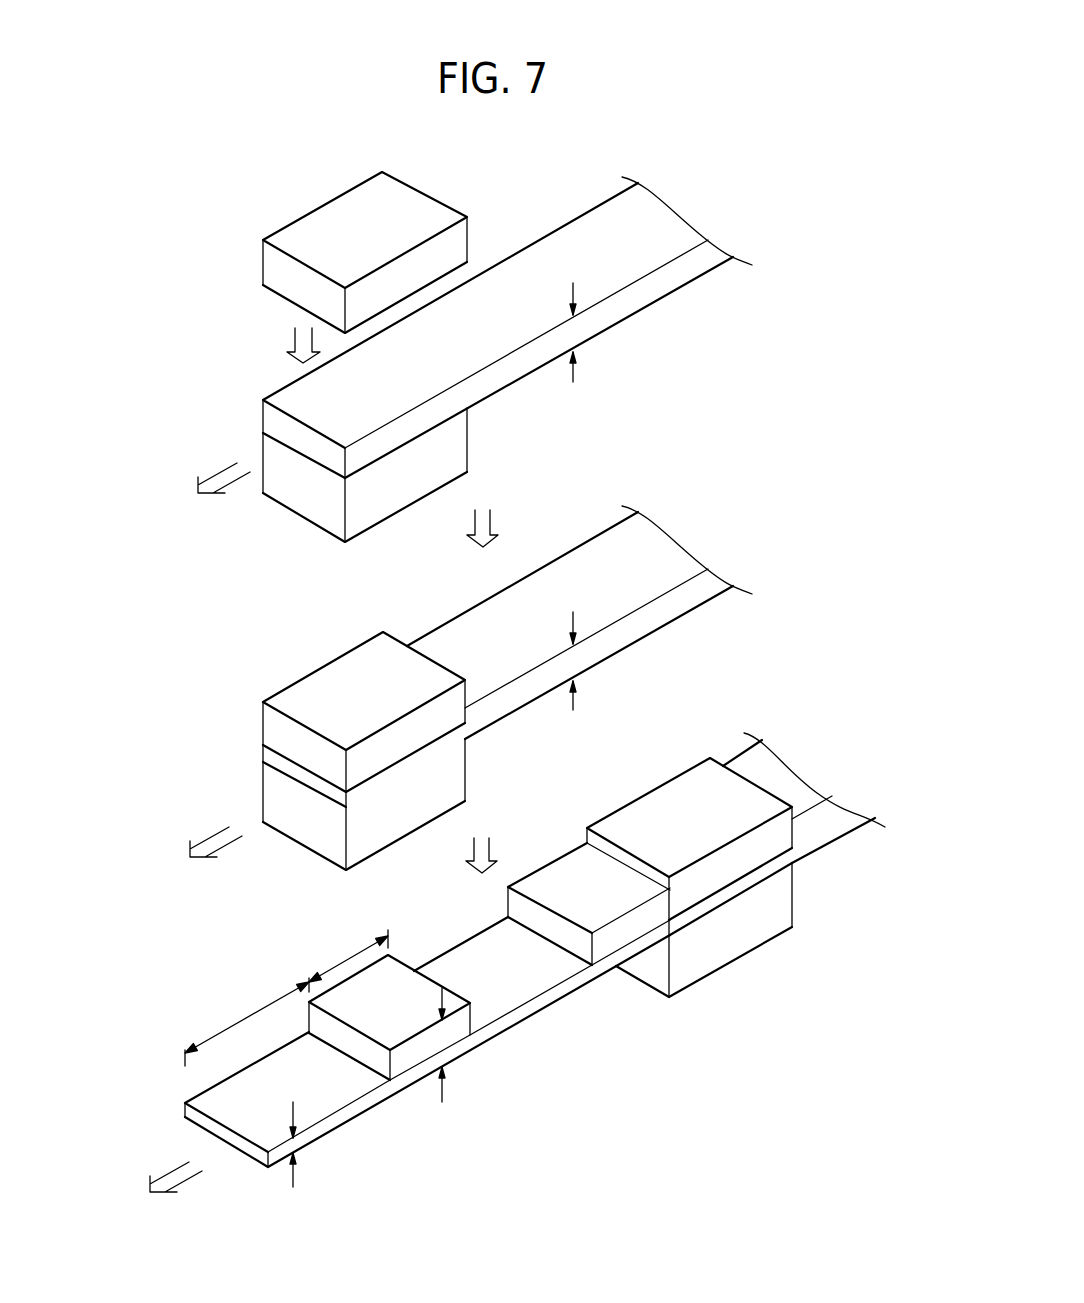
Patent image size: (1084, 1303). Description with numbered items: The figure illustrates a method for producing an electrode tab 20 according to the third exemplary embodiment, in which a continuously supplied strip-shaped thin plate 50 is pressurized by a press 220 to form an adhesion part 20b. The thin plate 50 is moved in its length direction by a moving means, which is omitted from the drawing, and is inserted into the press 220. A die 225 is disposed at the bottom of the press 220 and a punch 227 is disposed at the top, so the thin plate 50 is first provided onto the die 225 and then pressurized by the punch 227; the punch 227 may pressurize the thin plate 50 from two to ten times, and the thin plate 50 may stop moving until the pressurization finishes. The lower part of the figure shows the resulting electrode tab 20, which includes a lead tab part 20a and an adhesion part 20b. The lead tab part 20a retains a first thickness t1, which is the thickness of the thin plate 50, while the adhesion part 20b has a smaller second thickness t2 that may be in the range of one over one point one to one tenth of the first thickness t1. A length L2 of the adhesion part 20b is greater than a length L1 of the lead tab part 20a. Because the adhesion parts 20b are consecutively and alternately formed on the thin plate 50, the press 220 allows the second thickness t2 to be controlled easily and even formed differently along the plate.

The press 220 is at (170, 240).
The punch 227 is at (275, 262).
The die 225 is at (275, 460).
The strip-shaped thin plate 50 is at (674, 298).
The electrode tab 20 is at (535, 963).
The lead tab part 20a is at (392, 1017).
The adhesion part 20b is at (327, 1080).
The first thickness t1 is at (573, 333).
The second thickness t2 is at (296, 1147).
The length of the lead tab part L1 is at (348, 956).
The length of the adhesion part L2 is at (247, 1022).